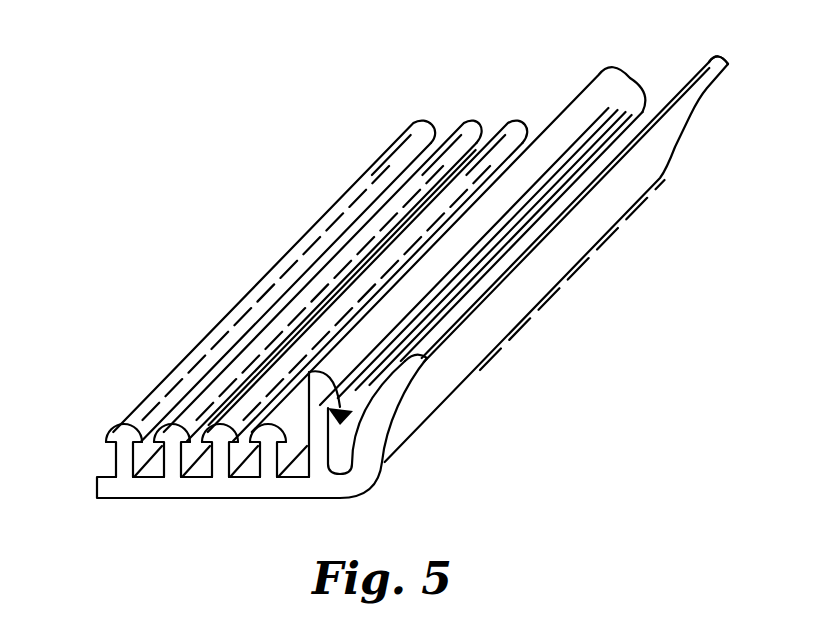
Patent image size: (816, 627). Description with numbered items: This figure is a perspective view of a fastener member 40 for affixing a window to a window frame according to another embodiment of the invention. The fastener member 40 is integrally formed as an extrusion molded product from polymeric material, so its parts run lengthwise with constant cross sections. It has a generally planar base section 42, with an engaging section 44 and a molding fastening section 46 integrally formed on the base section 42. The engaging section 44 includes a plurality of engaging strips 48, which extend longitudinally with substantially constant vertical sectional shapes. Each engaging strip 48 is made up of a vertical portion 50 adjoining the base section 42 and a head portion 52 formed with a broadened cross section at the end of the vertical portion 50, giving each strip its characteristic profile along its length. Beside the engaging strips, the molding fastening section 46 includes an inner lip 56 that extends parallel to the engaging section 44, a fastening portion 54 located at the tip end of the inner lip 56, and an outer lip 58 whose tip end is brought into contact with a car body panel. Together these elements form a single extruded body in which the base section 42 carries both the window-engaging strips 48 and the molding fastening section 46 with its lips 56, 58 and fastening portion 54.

The fastener member 40 is at (246, 100).
The base section 42 is at (104, 467).
The engaging section 44 is at (185, 342).
The molding fastening section 46 is at (545, 270).
The engaging strips 48 is at (330, 234).
The vertical portion 50 is at (172, 462).
The head portion 52 is at (207, 460).
The fastening portion 54 is at (354, 412).
The inner lip 56 is at (627, 80).
The outer lip 58 is at (713, 58).